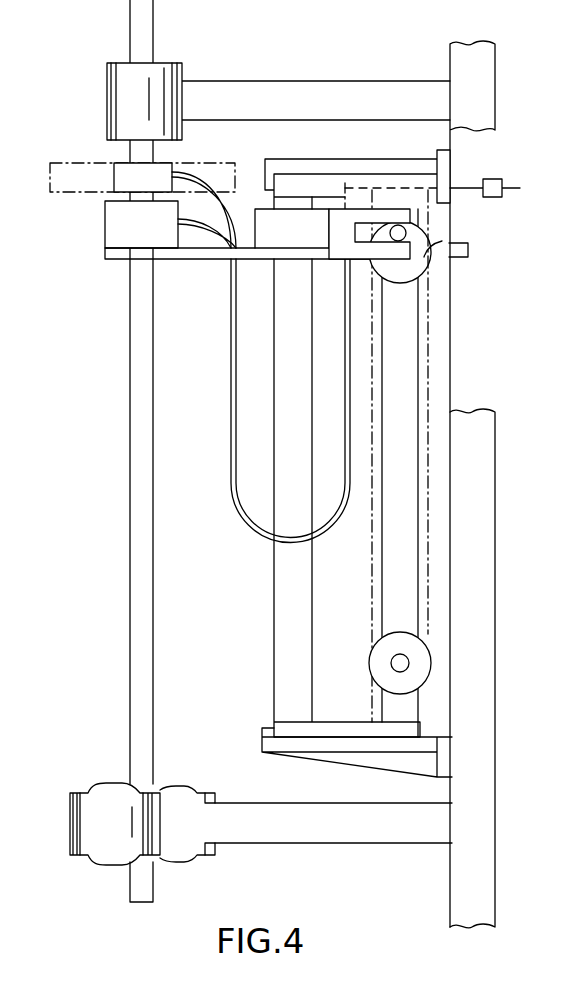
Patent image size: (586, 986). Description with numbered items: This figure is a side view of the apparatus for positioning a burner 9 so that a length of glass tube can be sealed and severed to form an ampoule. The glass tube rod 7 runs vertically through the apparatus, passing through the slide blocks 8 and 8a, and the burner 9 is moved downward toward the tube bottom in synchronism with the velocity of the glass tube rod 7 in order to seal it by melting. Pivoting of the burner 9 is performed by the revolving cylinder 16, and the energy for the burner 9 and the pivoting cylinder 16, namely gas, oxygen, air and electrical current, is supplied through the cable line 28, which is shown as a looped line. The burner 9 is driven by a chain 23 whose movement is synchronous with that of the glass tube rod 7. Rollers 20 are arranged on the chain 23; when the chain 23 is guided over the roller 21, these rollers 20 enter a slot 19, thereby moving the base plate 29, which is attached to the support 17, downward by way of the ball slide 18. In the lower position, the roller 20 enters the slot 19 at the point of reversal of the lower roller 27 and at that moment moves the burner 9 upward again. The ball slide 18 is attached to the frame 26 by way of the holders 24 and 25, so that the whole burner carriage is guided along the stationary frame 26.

The glass tube rod 7 is at (140, 431).
The slide block 8 is at (124, 100).
The lower slide block 8a is at (102, 830).
The burner 9 is at (135, 178).
The revolving cylinder 16 is at (140, 222).
The support 17 is at (316, 233).
The ball slide 18 is at (290, 352).
The slot 19 is at (372, 228).
The roller 20 is at (400, 233).
The roller 21 is at (468, 250).
The chain 23 is at (428, 356).
The holder 24 is at (276, 164).
The holder 25 is at (362, 745).
The frame 26 is at (478, 522).
The lower roller 27 is at (417, 675).
The cable line 28 is at (234, 325).
The base plate 29 is at (205, 257).